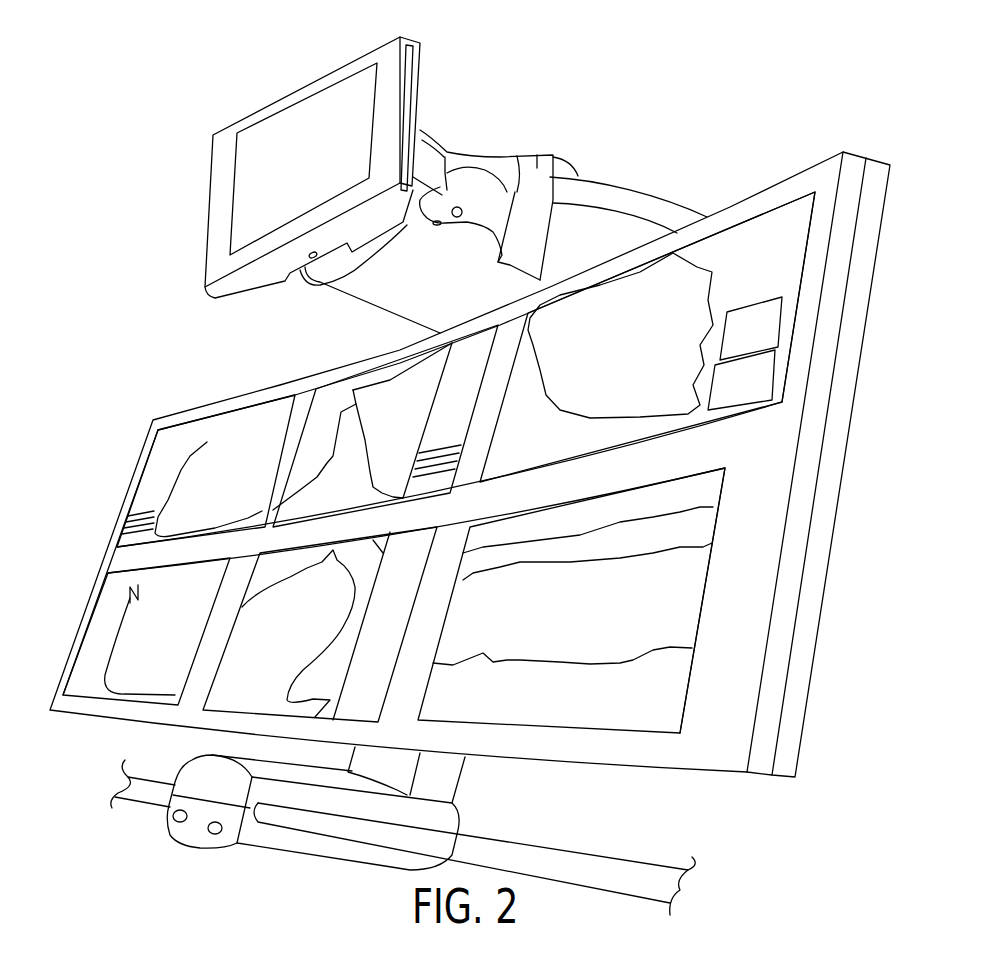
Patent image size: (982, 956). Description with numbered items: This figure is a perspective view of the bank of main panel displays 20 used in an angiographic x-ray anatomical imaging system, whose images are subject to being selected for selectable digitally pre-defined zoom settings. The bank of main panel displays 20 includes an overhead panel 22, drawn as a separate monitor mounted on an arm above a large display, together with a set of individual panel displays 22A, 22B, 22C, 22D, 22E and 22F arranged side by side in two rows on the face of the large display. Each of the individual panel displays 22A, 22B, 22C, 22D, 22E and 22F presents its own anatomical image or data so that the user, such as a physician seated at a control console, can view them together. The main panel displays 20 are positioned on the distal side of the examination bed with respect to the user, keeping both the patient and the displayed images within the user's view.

The main panel displays 20 is at (895, 415).
The overhead panel 22 is at (300, 88).
The panel display 22A is at (163, 460).
The panel display 22B is at (427, 368).
The panel display 22C is at (650, 293).
The panel display 22D is at (102, 635).
The panel display 22E is at (223, 702).
The panel display 22F is at (540, 710).